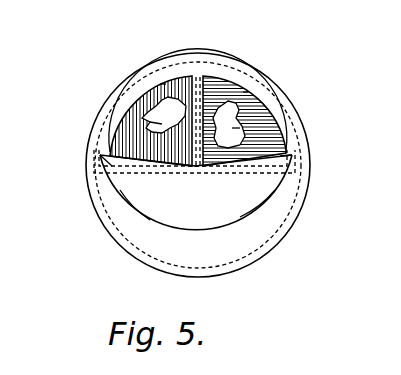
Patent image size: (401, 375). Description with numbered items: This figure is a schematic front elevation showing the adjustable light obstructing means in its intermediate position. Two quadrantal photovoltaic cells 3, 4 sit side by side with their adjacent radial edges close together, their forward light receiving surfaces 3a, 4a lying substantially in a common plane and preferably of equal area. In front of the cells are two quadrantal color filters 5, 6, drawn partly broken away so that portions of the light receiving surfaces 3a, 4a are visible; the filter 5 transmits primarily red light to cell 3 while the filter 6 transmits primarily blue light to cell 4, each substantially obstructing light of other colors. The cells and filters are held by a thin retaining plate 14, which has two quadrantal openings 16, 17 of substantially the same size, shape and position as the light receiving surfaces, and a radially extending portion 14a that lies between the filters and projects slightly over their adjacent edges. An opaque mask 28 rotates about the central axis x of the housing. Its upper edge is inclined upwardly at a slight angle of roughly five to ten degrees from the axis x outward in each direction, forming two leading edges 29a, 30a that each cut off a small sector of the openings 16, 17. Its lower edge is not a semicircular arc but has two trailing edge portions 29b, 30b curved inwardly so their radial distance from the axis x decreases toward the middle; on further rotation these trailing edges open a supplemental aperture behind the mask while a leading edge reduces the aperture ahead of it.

The photovoltaic cell 3 is at (170, 103).
The light receiving surface 3a is at (153, 122).
The photovoltaic cell 4 is at (237, 113).
The light receiving surface 4a is at (237, 128).
The color filter 5 is at (127, 140).
The color filter 6 is at (272, 140).
The retaining plate 14 is at (253, 63).
The radially extending portion 14a is at (224, 73).
The quadrantal opening 16 is at (163, 84).
The quadrantal opening 17 is at (245, 92).
The opaque mask 28 is at (145, 201).
The leading edge 29a is at (107, 168).
The trailing edge portion 29b is at (148, 218).
The leading edge 30a is at (287, 149).
The trailing edge portion 30b is at (260, 207).
The central axis x is at (198, 168).